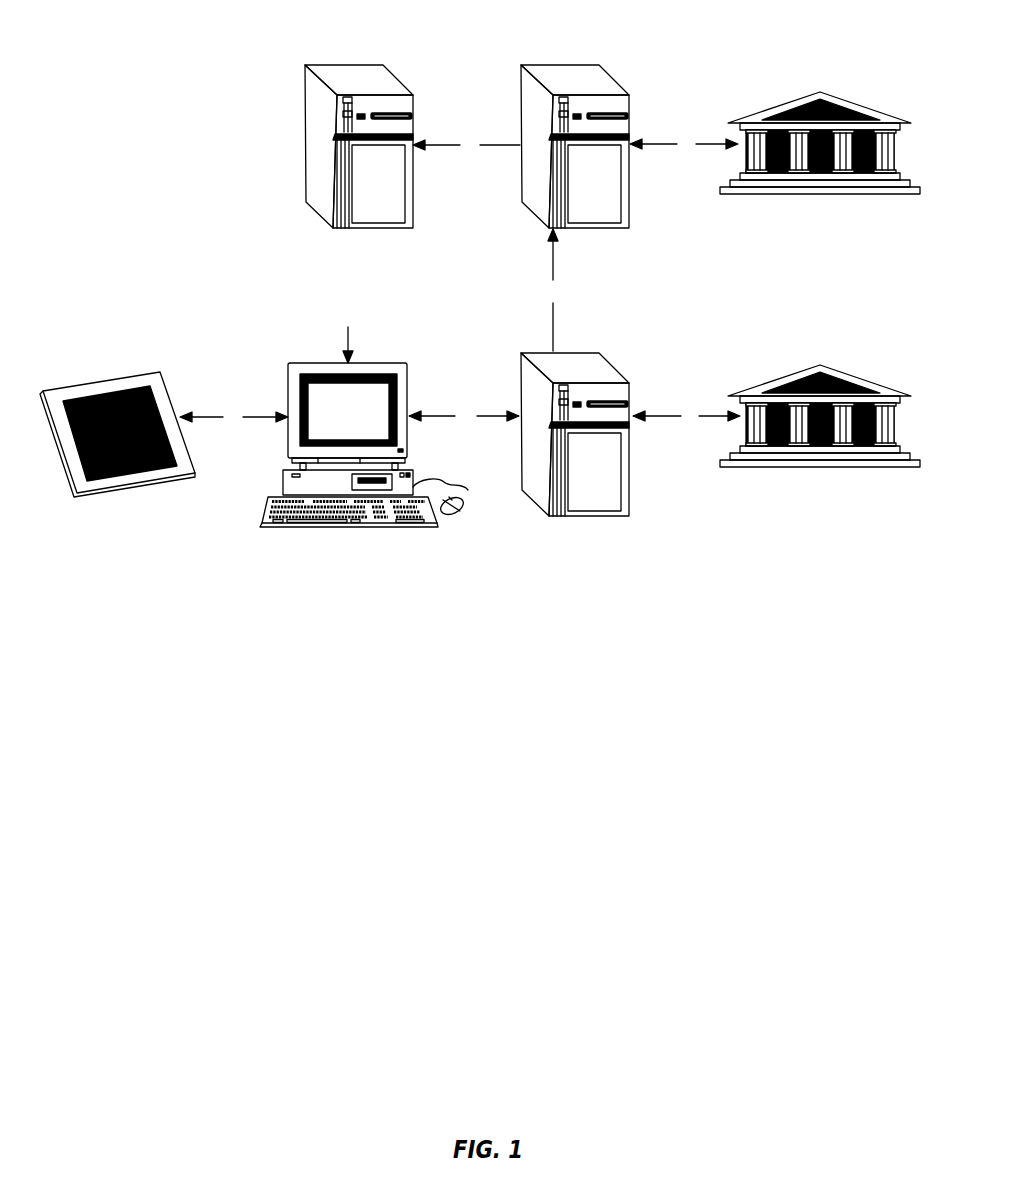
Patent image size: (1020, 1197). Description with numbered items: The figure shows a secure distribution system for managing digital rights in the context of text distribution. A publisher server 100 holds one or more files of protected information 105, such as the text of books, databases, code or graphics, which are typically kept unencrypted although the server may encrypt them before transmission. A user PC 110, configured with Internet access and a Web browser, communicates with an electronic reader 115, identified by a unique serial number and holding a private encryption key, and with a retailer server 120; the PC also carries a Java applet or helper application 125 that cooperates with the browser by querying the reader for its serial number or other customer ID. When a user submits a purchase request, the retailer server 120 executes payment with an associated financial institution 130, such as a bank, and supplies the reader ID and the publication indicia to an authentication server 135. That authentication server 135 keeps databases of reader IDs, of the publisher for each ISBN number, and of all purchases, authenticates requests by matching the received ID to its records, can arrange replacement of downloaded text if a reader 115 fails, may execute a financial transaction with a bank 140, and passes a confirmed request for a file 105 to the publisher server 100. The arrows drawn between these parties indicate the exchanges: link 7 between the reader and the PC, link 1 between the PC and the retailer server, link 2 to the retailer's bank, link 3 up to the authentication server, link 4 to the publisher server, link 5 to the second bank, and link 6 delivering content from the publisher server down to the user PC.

The publisher server 100 is at (345, 64).
The files of protected information 105 is at (305, 130).
The user PC 110 is at (315, 410).
The electronic reader 115 is at (130, 472).
The retailer server 120 is at (573, 350).
The helper application 125 is at (395, 363).
The financial institution 130 is at (799, 370).
The authentication server 135 is at (566, 62).
The bank 140 is at (799, 98).
The communication link between user's PC and retailer's server 1 is at (464, 416).
The communication link between retailer's server and bank 2 is at (686, 416).
The communication link between retailer's server and server 3 is at (552, 290).
The communication link between server and publisher's server 4 is at (466, 144).
The communication link between server and bank 5 is at (684, 144).
The communication link between publisher's server and user's PC 6 is at (347, 334).
The communication link between user's PC and storage medium 7 is at (234, 417).